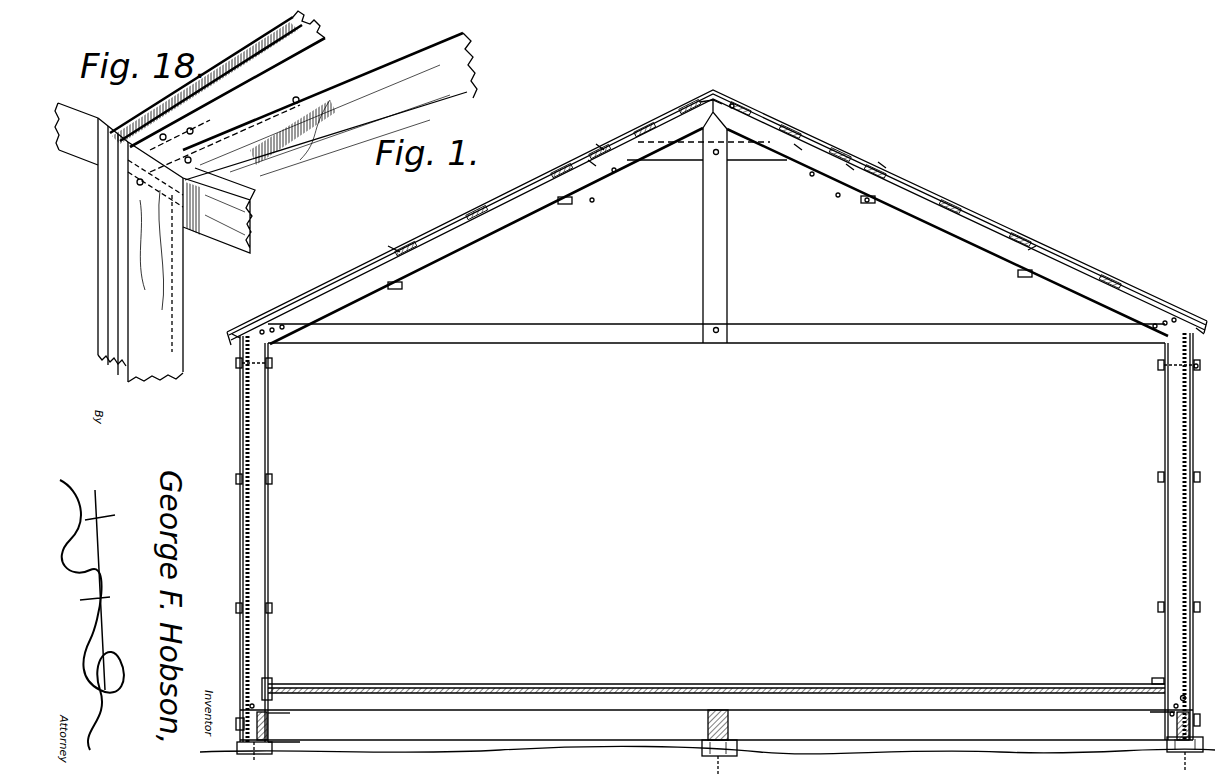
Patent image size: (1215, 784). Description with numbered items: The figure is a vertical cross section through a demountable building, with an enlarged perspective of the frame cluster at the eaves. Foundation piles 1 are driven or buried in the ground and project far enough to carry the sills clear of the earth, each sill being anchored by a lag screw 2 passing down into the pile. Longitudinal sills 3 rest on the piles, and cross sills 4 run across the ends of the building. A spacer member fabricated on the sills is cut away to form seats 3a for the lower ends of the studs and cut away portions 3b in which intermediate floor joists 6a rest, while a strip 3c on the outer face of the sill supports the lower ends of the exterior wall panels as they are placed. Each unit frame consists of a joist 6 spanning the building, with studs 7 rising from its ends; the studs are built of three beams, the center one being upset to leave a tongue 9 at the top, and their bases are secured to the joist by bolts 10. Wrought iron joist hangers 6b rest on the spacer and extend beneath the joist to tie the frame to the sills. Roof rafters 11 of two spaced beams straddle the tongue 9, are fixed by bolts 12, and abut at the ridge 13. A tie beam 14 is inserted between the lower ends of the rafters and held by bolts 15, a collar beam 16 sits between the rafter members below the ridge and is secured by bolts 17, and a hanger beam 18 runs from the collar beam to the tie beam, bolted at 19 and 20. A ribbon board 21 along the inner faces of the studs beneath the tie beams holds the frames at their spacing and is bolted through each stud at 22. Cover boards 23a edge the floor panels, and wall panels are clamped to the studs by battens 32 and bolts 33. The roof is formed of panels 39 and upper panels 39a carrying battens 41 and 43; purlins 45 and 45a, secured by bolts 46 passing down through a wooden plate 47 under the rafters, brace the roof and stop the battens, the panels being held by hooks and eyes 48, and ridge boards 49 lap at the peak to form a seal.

In FIG. 1, the foundation piles 1 is at (280, 752).
In FIG. 1, the lag screw 2 is at (252, 762).
In FIG. 1, the sills 3 is at (270, 722).
In FIG. 1, the seats 3a is at (238, 722).
In FIG. 1, the cut away portions 3b is at (1177, 724).
In FIG. 1, the strip 3c is at (1172, 712).
In FIG. 1, the cross sills 4 is at (878, 708).
In FIG. 1, the joist 6 is at (1030, 708).
In FIG. 1, the intermediate floor joists 6a is at (1150, 714).
In FIG. 1, the joist hangers 6b is at (290, 712).
In FIG. 18, the studs 7 is at (165, 283).
In FIG. 1, the studs 7 is at (270, 505).
In FIG. 18, the tongue 9 is at (102, 148).
In FIG. 1, the bolts 10 is at (276, 690).
In FIG. 18, the roof rafters 11 is at (250, 48).
In FIG. 1, the roof rafters 11 is at (520, 222).
In FIG. 18, the bolts 12 is at (142, 200).
In FIG. 1, the bolts 12 is at (242, 346).
In FIG. 1, the ridge 13 is at (692, 120).
In FIG. 18, the tie beam 14 is at (456, 34).
In FIG. 1, the tie beam 14 is at (600, 345).
In FIG. 18, the bolts 15 is at (200, 152).
In FIG. 1, the bolts 15 is at (282, 332).
In FIG. 1, the collar beam 16 is at (668, 162).
In FIG. 1, the bolts 17 is at (630, 142).
In FIG. 1, the hanger beam 18 is at (704, 252).
In FIG. 1, the bolt 19 is at (722, 158).
In FIG. 1, the bolt 20 is at (713, 328).
In FIG. 18, the ribbon board 21 is at (252, 212).
In FIG. 1, the ribbon board 21 is at (272, 366).
In FIG. 1, the bolts 22 is at (275, 363).
In FIG. 1, the cover boards 23a is at (272, 684).
In FIG. 1, the battens 32 is at (240, 540).
In FIG. 1, the bolts 33 is at (240, 480).
In FIG. 1, the roof panels 39 is at (490, 206).
In FIG. 1, the upper roof panels 39a is at (805, 96).
In FIG. 1, the battens 41 is at (556, 173).
In FIG. 1, the battens 43 is at (598, 145).
In FIG. 1, the purlin 45 is at (590, 161).
In FIG. 1, the purlin 45a is at (1060, 250).
In FIG. 1, the bolts 46 is at (594, 201).
In FIG. 1, the wooden plate 47 is at (566, 205).
In FIG. 1, the hooks and eyes 48 is at (734, 104).
In FIG. 1, the ridge boards 49 is at (708, 96).